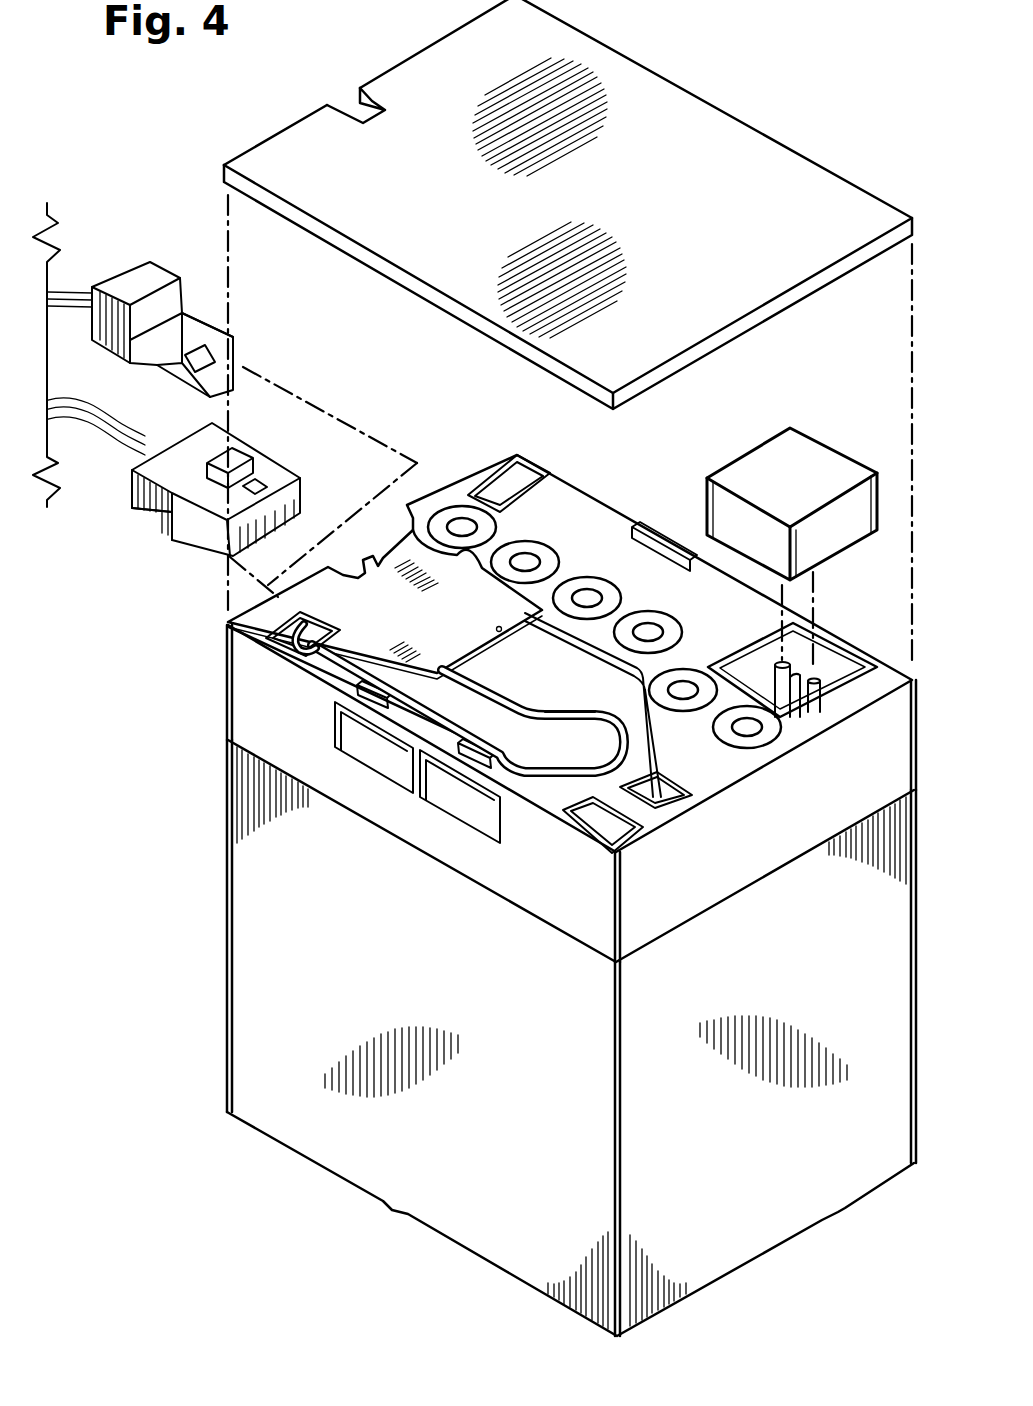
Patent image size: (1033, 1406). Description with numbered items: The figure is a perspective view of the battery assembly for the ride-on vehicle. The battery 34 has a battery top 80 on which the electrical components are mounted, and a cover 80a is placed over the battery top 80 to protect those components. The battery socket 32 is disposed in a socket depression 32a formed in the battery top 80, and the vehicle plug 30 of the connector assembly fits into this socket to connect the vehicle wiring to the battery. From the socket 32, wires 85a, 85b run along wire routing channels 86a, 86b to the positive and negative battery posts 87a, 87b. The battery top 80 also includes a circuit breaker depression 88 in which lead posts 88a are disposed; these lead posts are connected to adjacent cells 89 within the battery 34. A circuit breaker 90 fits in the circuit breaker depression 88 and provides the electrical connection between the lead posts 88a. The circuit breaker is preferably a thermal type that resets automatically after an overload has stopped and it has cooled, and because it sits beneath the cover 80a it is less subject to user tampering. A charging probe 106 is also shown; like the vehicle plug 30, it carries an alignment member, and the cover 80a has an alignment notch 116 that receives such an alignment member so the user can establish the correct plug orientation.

The cover 80a is at (708, 110).
The alignment notch 116 is at (352, 106).
The charging probe 106 is at (167, 243).
The vehicle plug 30 is at (152, 555).
The battery top 80 is at (213, 680).
The battery 34 is at (360, 984).
The battery socket 32 is at (440, 626).
The socket depression 32a is at (500, 633).
The cells 89 is at (690, 678).
The negative battery post 87b is at (262, 630).
The wire 85b is at (305, 632).
The wire routing channel 86b is at (523, 736).
The wire routing channel 86a is at (630, 697).
The wire 85a is at (650, 752).
The positive battery post 87a is at (667, 787).
The circuit breaker depression 88 is at (822, 654).
The lead posts 88a is at (806, 708).
The circuit breaker 90 is at (800, 488).